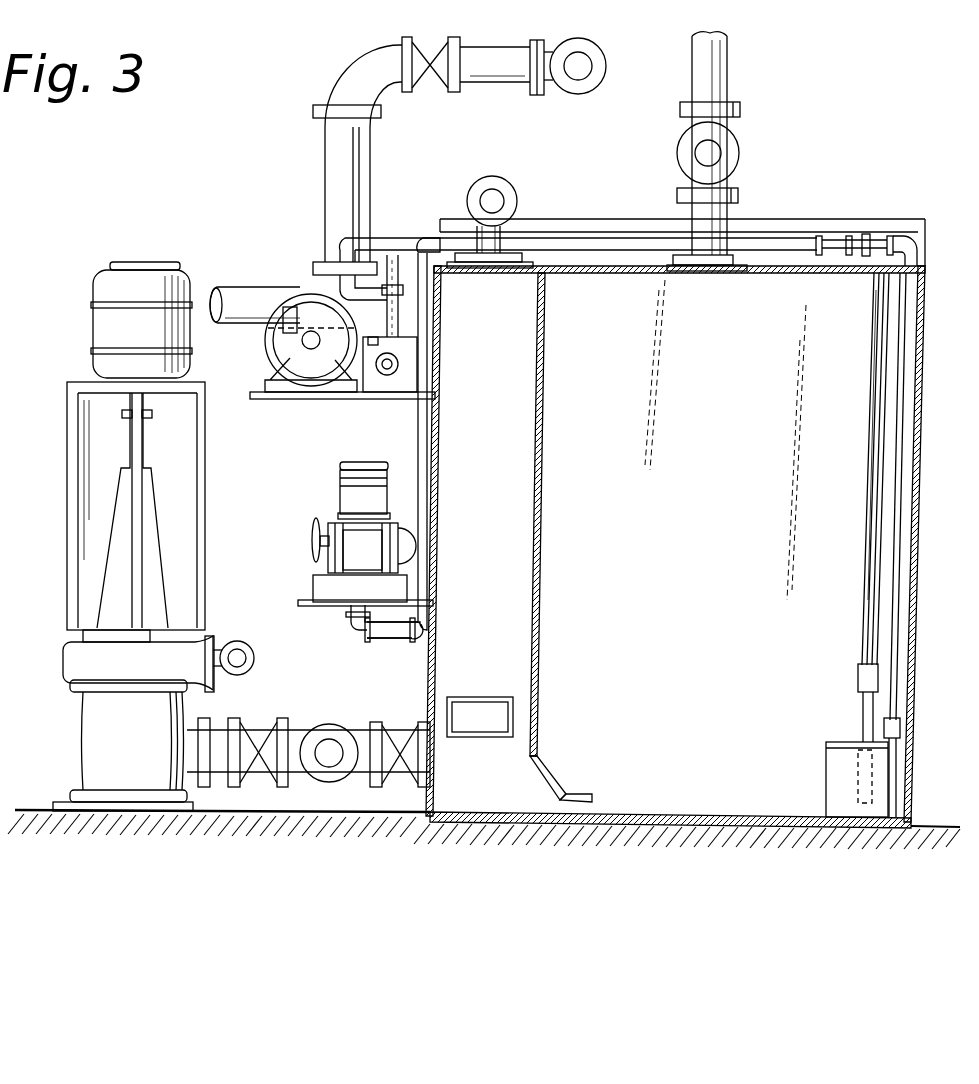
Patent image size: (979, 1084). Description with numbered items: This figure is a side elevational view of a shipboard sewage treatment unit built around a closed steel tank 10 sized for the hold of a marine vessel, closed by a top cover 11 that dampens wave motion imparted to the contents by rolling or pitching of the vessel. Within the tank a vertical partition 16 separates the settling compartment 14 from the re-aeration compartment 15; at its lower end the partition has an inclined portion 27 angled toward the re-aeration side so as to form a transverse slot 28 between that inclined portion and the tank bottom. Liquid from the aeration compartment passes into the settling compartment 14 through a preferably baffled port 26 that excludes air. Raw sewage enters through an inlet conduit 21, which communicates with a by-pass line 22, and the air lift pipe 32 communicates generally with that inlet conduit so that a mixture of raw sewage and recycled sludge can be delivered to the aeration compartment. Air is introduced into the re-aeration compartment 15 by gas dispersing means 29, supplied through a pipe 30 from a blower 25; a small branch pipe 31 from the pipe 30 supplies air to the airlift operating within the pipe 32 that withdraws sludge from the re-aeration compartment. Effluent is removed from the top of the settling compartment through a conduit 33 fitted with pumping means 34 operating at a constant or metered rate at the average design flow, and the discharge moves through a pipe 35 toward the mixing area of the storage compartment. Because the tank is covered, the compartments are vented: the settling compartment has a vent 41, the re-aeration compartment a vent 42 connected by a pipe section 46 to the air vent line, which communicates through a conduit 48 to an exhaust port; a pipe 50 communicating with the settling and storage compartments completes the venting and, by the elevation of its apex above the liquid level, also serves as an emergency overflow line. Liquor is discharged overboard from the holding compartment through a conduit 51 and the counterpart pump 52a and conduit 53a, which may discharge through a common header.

The tank 10 is at (913, 443).
The top cover 11 is at (778, 266).
The settling compartment 14 is at (488, 507).
The re-aeration compartment 15 is at (742, 468).
The partition 16 is at (541, 525).
The inlet conduit 21 is at (236, 313).
The by-pass line 22 is at (487, 80).
The blower 25 is at (338, 503).
The port 26 is at (492, 671).
The inclined portion 27 is at (560, 791).
The transverse slot 28 is at (596, 804).
The gas dispersing means 29 is at (833, 771).
The pipe 30 is at (615, 240).
The branch pipe 31 is at (870, 517).
The air lift pipe 32 is at (404, 240).
The conduit 33 is at (405, 278).
The pumping means 34 is at (365, 340).
The pipe 35 is at (427, 396).
The vent 41 is at (498, 268).
The vent 42 is at (708, 270).
The pipe section 46 is at (725, 218).
The conduit 48 is at (729, 127).
The pipe 50 is at (512, 188).
The conduit 51 is at (291, 778).
The pump 52a is at (180, 714).
The conduit 53a is at (252, 658).